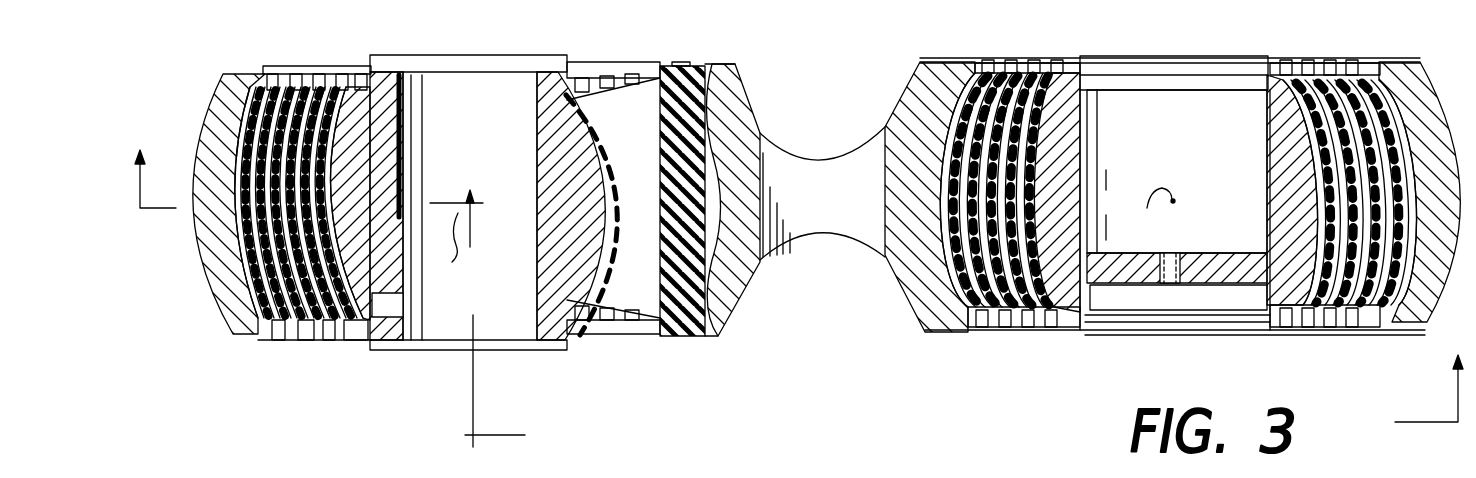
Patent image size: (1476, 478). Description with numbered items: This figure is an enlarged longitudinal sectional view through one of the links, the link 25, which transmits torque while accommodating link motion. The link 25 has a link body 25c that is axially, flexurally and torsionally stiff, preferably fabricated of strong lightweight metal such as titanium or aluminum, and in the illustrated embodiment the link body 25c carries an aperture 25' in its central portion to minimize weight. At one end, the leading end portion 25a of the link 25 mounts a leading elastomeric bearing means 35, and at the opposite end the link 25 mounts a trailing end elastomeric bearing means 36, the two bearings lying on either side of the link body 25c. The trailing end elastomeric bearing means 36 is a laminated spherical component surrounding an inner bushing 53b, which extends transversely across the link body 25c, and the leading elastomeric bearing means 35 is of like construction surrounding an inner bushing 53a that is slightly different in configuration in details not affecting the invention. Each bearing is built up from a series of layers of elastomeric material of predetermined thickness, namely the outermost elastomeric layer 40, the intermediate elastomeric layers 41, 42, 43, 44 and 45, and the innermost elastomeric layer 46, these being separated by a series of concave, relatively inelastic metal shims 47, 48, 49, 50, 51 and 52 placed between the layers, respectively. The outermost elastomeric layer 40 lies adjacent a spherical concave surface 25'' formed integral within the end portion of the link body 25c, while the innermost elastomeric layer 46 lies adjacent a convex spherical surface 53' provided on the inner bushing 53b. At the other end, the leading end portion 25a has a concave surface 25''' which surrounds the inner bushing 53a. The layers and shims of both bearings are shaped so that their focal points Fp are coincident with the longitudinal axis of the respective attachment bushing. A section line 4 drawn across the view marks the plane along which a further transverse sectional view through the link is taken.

The section line of FIG. 4 is at (795, 306).
The focal points Fp is at (802, 244).
The link 25 is at (930, 229).
The aperture 25' is at (822, 157).
The spherical concave surface 25'' is at (226, 248).
The concave surface 25''' is at (1316, 350).
The leading end portion 25a is at (1406, 322).
The link body 25c is at (742, 287).
The leading elastomeric bearing means 35 is at (1293, 100).
The trailing end elastomeric bearing means 36 is at (660, 78).
The outermost elastomeric layer 40 is at (290, 240).
The elastomeric layer 41 is at (295, 268).
The elastomeric layer 42 is at (283, 285).
The elastomeric layer 43 is at (288, 340).
The elastomeric layer 44 is at (327, 340).
The elastomeric layer 45 is at (357, 340).
The innermost elastomeric layer 46 is at (404, 300).
The metal shim 47 is at (285, 73).
The metal shim 48 is at (267, 95).
The metal shim 49 is at (290, 98).
The metal shim 50 is at (330, 123).
The metal shim 51 is at (340, 150).
The metal shim 52 is at (367, 92).
The convex spherical surface 53' is at (412, 207).
The inner bushing 53a is at (1087, 120).
The inner bushing 53b is at (540, 83).